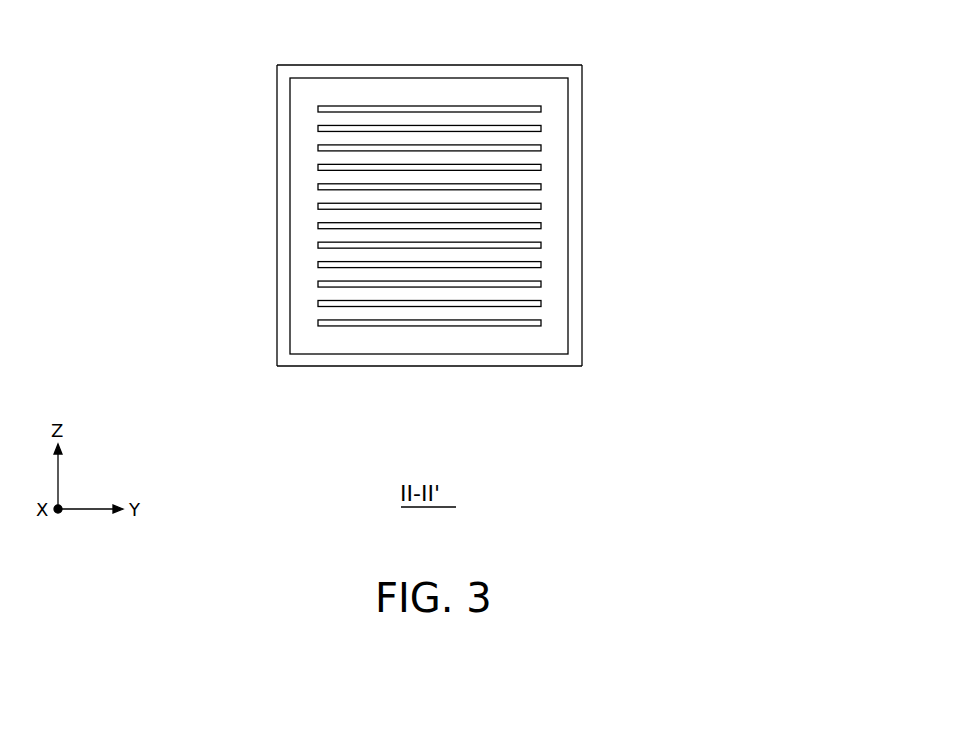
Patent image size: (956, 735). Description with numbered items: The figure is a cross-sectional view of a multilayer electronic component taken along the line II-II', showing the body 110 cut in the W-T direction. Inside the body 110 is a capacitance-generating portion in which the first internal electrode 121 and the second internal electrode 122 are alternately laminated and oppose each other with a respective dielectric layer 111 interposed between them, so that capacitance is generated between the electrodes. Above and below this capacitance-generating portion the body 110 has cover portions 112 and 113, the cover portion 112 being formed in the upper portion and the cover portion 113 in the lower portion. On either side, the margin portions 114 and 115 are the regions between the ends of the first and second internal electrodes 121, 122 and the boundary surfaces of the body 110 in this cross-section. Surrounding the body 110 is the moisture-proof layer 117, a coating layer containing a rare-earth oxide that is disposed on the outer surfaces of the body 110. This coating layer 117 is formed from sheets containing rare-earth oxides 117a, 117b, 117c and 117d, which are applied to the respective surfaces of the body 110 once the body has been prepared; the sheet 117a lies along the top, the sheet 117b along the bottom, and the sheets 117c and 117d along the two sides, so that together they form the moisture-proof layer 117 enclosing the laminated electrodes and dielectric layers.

The body 110 is at (580, 203).
The dielectric layer 111 is at (532, 118).
The cover portion 112 is at (387, 85).
The cover portion 113 is at (388, 345).
The margin portion 114 is at (305, 258).
The margin portion 115 is at (553, 275).
The moisture-proof layer 117 is at (774, 125).
The sheet containing rare-earth oxide 117a is at (453, 72).
The sheet containing rare-earth oxide 117b is at (452, 360).
The sheet containing rare-earth oxide 117c is at (285, 193).
The sheet containing rare-earth oxide 117d is at (575, 243).
The first internal electrode 121 is at (541, 107).
The second internal electrode 122 is at (541, 128).